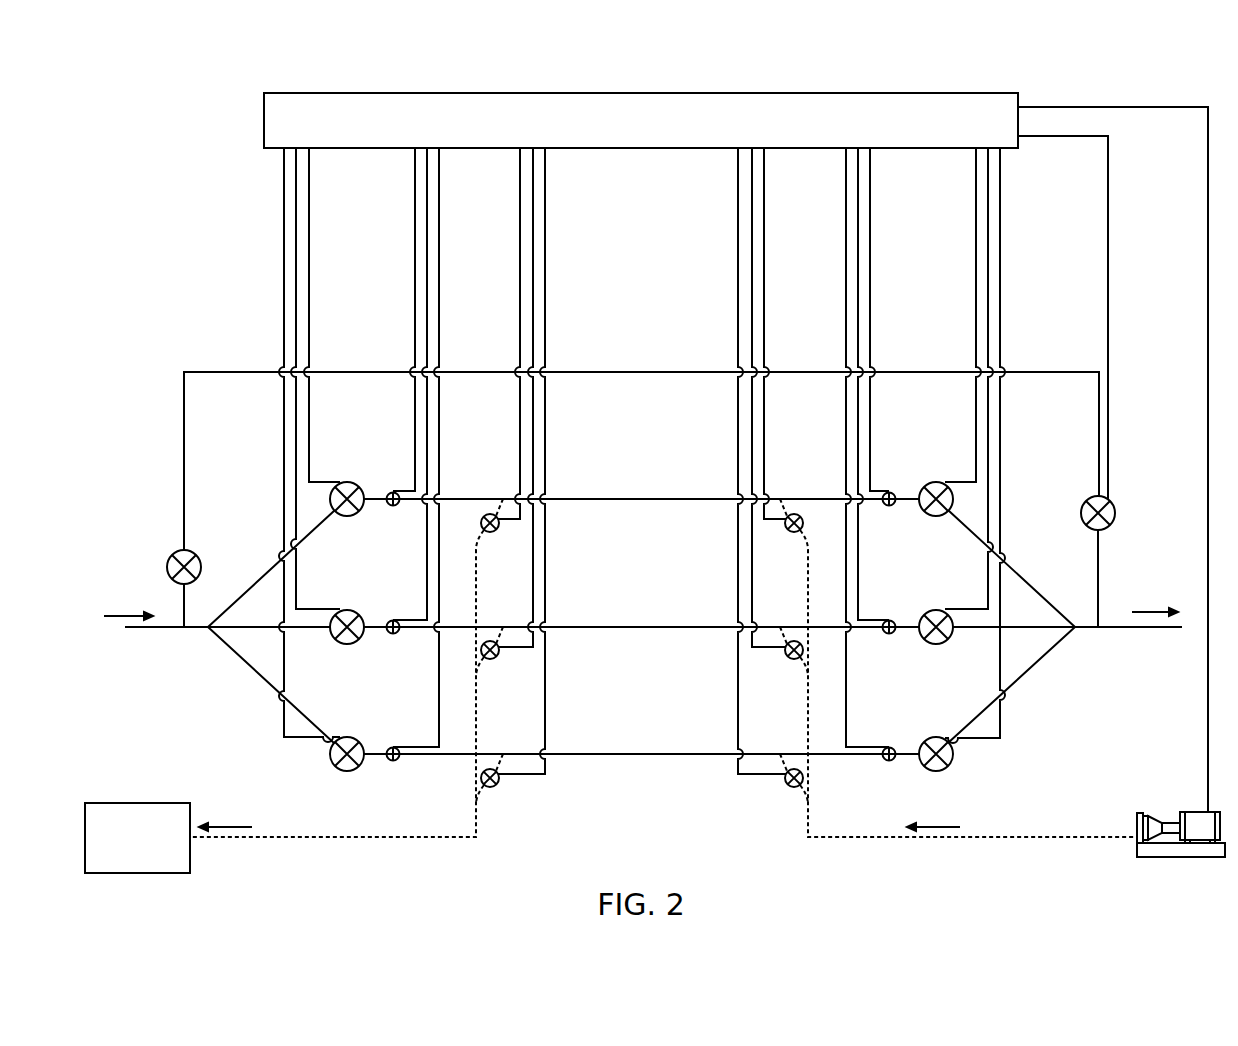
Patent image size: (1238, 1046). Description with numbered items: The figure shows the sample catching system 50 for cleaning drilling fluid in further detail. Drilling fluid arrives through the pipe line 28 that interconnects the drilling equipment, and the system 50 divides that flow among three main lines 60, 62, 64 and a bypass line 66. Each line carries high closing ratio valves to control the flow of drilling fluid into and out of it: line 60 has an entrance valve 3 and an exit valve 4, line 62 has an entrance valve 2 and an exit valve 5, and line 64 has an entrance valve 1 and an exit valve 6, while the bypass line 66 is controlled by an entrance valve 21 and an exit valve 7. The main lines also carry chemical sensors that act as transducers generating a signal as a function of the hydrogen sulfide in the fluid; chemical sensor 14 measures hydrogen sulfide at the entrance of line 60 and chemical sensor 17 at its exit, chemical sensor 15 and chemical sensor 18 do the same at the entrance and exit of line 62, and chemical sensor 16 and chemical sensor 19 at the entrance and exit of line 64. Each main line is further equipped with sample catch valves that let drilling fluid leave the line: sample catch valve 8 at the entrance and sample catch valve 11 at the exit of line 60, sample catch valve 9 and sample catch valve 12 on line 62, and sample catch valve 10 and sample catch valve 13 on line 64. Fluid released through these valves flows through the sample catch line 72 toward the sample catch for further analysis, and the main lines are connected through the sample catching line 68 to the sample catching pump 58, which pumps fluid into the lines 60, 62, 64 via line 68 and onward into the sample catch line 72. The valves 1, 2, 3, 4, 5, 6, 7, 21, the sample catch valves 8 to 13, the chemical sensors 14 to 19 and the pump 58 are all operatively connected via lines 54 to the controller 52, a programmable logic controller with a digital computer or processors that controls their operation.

The sample catching system 50 is at (652, 483).
The controller 52 is at (596, 148).
The lines 54 is at (310, 264).
The sample catching pump 58 is at (1195, 812).
The main line 60 is at (562, 499).
The main line 62 is at (562, 627).
The main line 64 is at (562, 754).
The bypass line 66 is at (560, 372).
The sample catching line 68 is at (1000, 837).
The sample catch line 72 is at (298, 835).
The pipe line 28 is at (130, 612).
The entrance valve 1 is at (347, 741).
The entrance valve 2 is at (347, 614).
The entrance valve 3 is at (347, 485).
The exit valve 4 is at (936, 486).
The exit valve 5 is at (936, 613).
The exit valve 6 is at (936, 740).
The exit valve 7 is at (1092, 503).
The sample catch valve 8 is at (495, 537).
The sample catch valve 9 is at (495, 664).
The sample catch valve 10 is at (498, 792).
The sample catch valve 11 is at (786, 537).
The sample catch valve 12 is at (786, 664).
The sample catch valve 13 is at (786, 792).
The chemical sensor 14 is at (393, 485).
The chemical sensor 15 is at (393, 613).
The chemical sensor 16 is at (393, 740).
The chemical sensor 17 is at (888, 484).
The chemical sensor 18 is at (888, 612).
The chemical sensor 19 is at (888, 740).
The entrance valve 21 is at (176, 557).